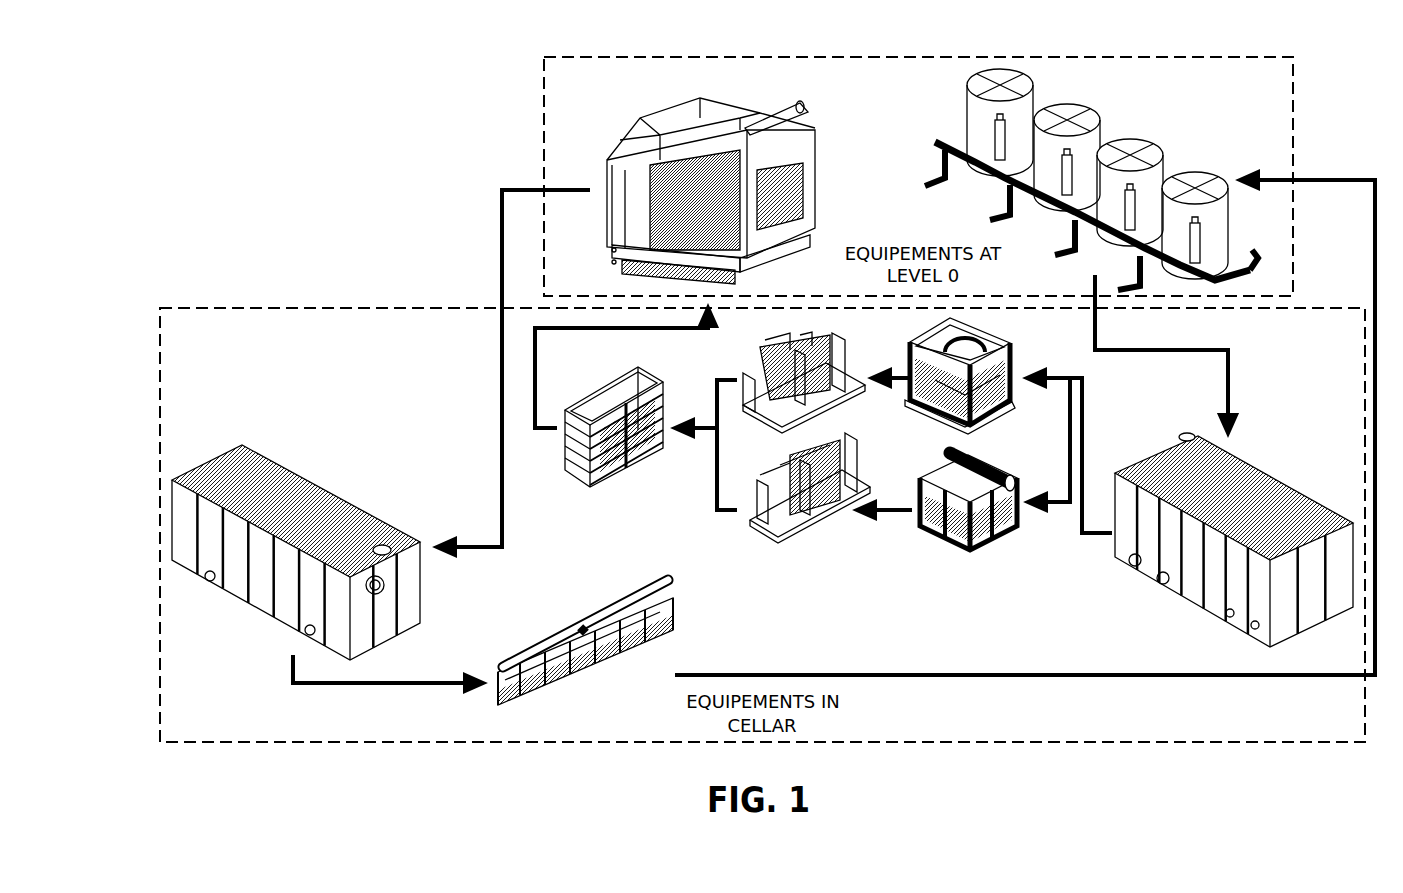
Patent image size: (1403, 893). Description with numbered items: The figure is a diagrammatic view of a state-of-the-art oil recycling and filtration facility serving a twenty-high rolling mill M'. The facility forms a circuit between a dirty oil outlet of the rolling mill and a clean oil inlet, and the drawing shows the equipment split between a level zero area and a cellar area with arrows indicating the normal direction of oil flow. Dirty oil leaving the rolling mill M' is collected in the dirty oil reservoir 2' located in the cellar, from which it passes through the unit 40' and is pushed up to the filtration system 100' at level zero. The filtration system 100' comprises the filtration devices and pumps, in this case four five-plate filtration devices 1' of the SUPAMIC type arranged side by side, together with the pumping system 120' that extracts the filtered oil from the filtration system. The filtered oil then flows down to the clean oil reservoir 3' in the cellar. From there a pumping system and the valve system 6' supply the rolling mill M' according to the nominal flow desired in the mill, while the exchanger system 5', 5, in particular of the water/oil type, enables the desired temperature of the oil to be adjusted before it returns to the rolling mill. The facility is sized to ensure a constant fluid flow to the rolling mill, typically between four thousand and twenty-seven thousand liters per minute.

The rolling mill M' is at (711, 153).
The filtration system 100' is at (1073, 146).
The pumping system (extracting the oil from the filtration system) 120' is at (1061, 180).
The five-plate filtration device 1' is at (1124, 142).
The dirty oil reservoir 2' is at (296, 545).
The clean oil reservoir 3' is at (1234, 536).
The exchanger system 5' is at (822, 377).
The exchanger system 5 is at (826, 484).
The valve system 6' is at (614, 446).
The conveyor unit 40' is at (639, 639).